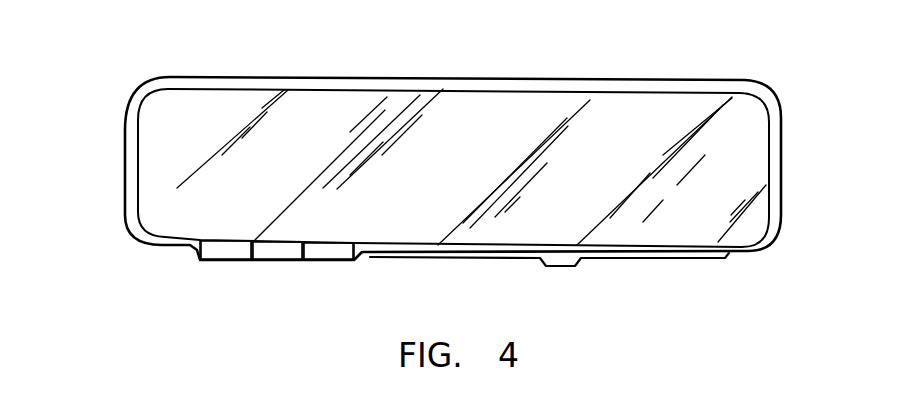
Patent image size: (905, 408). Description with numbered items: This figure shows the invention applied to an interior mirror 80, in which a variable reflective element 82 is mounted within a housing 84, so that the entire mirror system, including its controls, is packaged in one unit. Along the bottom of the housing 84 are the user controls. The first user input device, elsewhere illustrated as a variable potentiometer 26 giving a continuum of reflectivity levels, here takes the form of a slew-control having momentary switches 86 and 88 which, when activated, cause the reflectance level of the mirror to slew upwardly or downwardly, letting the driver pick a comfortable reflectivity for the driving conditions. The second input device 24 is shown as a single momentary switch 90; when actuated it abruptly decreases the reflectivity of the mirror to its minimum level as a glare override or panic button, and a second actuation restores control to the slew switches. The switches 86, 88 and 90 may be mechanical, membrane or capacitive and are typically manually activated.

The interior mirror 80 is at (607, 72).
The variable reflective element 82 is at (443, 181).
The housing 84 is at (147, 243).
The variable potentiometer 26 is at (218, 294).
The momentary switch 86 is at (218, 262).
The momentary switch 88 is at (277, 262).
The single momentary switch 90 is at (324, 262).
The second input device 24 is at (374, 271).